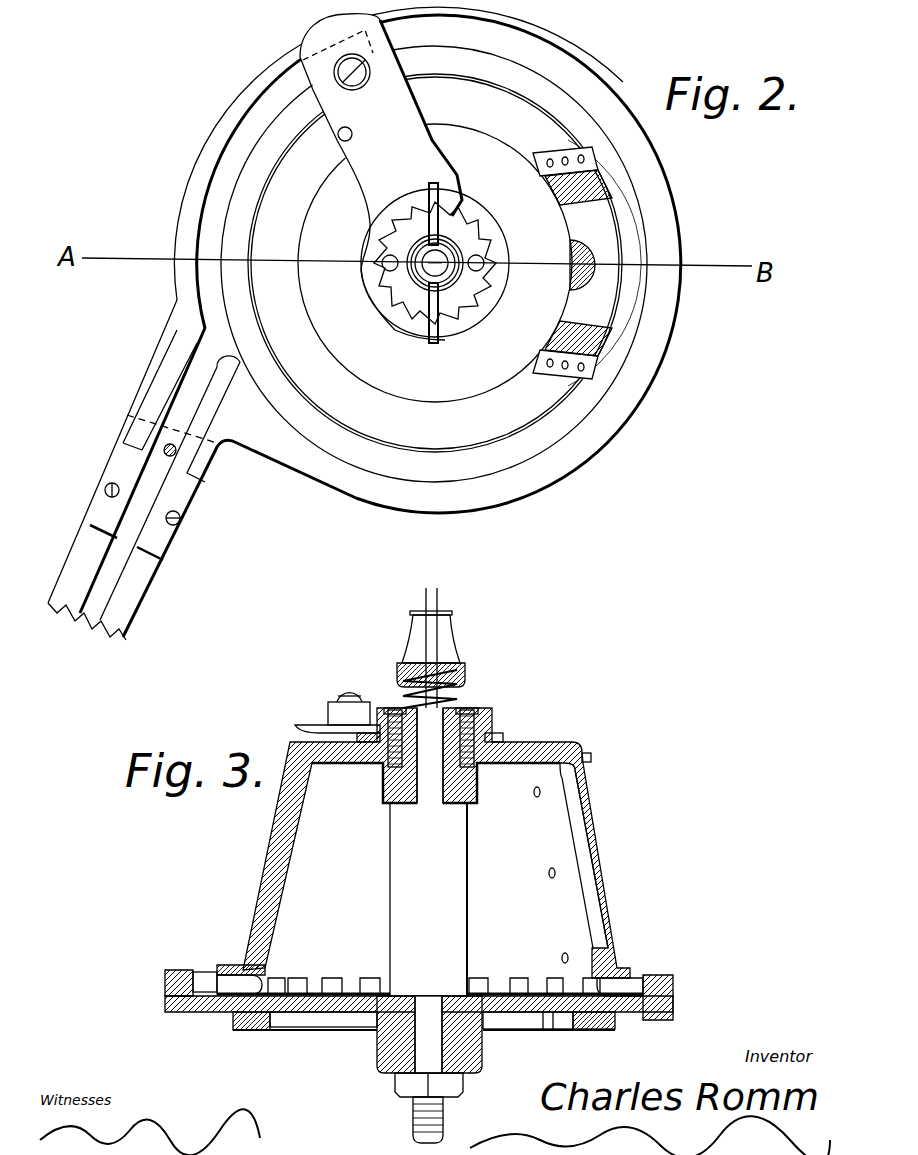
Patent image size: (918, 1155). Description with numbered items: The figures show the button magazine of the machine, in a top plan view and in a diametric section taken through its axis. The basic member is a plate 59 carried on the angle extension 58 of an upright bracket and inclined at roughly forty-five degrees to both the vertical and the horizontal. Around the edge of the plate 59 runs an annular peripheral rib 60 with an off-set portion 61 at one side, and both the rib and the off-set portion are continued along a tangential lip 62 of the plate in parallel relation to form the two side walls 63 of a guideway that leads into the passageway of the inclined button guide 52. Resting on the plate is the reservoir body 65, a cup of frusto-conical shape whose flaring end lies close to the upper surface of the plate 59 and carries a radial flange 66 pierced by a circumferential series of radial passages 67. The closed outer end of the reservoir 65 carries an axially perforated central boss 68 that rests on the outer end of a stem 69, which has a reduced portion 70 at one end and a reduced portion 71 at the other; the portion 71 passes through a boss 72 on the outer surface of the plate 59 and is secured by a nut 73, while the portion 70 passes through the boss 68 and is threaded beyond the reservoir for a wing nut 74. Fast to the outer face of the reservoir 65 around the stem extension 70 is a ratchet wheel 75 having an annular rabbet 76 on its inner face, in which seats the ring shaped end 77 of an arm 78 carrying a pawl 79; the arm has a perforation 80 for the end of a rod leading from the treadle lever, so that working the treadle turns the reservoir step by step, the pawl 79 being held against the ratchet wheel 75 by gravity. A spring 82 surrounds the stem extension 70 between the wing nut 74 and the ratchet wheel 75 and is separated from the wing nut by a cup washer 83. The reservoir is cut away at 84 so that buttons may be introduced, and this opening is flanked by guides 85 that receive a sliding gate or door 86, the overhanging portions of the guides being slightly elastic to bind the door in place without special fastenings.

In FIG. 2, the inclined button guide 52 is at (165, 557).
In FIG. 3, the angle extension 58 is at (262, 1020).
In FIG. 2, the plate 59 is at (626, 102).
In FIG. 3, the plate 59 is at (335, 1020).
In FIG. 2, the annular peripheral rib 60 is at (650, 352).
In FIG. 3, the annular peripheral rib 60 is at (675, 988).
In FIG. 2, the off-set portion 61 is at (206, 178).
In FIG. 3, the off-set portion 61 is at (203, 982).
In FIG. 2, the tangential lip 62 is at (187, 408).
In FIG. 2, the side walls 63 is at (150, 393).
In FIG. 2, the reservoir body 65 is at (489, 105).
In FIG. 3, the reservoir body 65 is at (270, 852).
In FIG. 2, the radial flange 66 is at (360, 452).
In FIG. 3, the radial flange 66 is at (223, 965).
In FIG. 3, the radial passages 67 is at (300, 976).
In FIG. 3, the central boss 68 is at (385, 790).
In FIG. 3, the stem 69 is at (407, 885).
In FIG. 2, the reduced portion 70 is at (430, 274).
In FIG. 3, the reduced portion 70 is at (435, 782).
In FIG. 3, the reduced portion 71 is at (423, 1012).
In FIG. 3, the boss 72 is at (465, 1040).
In FIG. 3, the nut 73 is at (410, 1084).
In FIG. 2, the wing nut 74 is at (437, 242).
In FIG. 3, the wing nut 74 is at (455, 637).
In FIG. 2, the ratchet wheel 75 is at (480, 294).
In FIG. 3, the ratchet wheel 75 is at (472, 718).
In FIG. 3, the annular rabbet 76 is at (495, 738).
In FIG. 2, the ring shaped end 77 is at (366, 300).
In FIG. 3, the ring shaped end 77 is at (495, 764).
In FIG. 3, the arm 78 is at (313, 707).
In FIG. 2, the pawl 79 is at (390, 117).
In FIG. 3, the pawl 79 is at (357, 718).
In FIG. 2, the perforation 80 is at (340, 139).
In FIG. 3, the spring 82 is at (457, 697).
In FIG. 2, the cup washer 83 is at (460, 250).
In FIG. 3, the cup washer 83 is at (398, 663).
In FIG. 3, the cut away 84 is at (581, 842).
In FIG. 2, the guides 85 is at (585, 190).
In FIG. 2, the sliding gate or door 86 is at (608, 268).
In FIG. 3, the sliding gate or door 86 is at (614, 896).